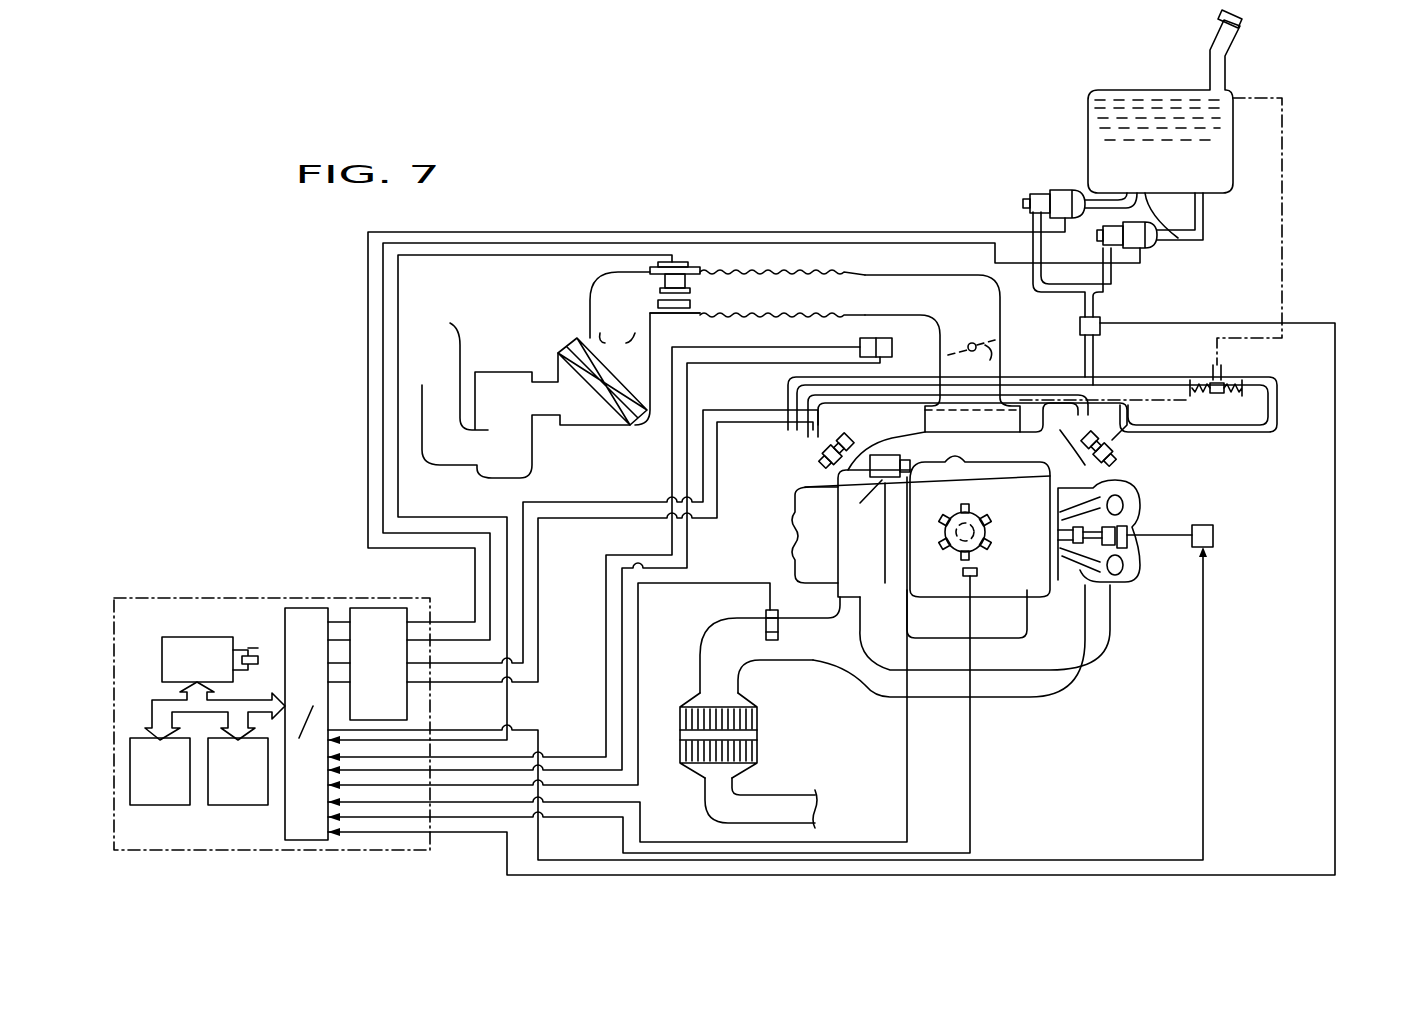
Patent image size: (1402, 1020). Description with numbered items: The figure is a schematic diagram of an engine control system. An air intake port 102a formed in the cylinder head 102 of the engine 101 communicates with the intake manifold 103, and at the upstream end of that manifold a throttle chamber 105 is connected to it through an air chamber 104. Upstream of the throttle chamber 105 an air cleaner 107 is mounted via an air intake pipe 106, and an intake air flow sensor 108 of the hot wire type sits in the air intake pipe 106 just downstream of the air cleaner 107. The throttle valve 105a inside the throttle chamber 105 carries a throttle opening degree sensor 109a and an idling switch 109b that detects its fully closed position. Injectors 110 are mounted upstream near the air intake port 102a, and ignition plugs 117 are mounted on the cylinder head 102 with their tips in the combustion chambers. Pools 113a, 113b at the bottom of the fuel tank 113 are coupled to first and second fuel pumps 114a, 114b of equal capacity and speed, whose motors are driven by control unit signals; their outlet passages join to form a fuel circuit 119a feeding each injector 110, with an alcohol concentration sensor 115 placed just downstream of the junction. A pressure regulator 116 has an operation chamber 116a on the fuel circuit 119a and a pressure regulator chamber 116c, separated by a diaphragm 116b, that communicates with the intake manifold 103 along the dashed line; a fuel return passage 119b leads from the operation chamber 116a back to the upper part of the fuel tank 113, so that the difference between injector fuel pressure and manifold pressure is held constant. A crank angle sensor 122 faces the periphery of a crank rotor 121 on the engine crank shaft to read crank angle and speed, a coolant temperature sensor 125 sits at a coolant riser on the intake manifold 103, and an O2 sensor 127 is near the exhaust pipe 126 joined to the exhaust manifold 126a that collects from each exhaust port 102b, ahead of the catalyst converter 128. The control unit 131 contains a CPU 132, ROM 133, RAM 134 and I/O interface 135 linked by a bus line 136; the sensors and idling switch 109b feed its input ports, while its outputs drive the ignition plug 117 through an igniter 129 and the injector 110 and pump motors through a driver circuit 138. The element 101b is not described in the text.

The engine 101 is at (1152, 500).
The crank angle reference 101b is at (956, 534).
The cylinder head 102 is at (846, 582).
The air intake port 102a is at (1058, 484).
The exhaust port 102b is at (1088, 606).
The intake manifold 103 is at (1093, 446).
The air chamber 104 is at (920, 425).
The throttle chamber 105 is at (998, 333).
The throttle valve 105a is at (982, 355).
The air intake pipe 106 is at (890, 280).
The air cleaner 107 is at (630, 428).
The intake air flow sensor 108 is at (694, 265).
The throttle opening degree sensor 109a is at (888, 335).
The idling switch 109b is at (860, 342).
The injector 110 is at (823, 462).
The fuel tank 113 is at (1088, 120).
The pool 113a is at (1212, 195).
The pool 113b is at (1170, 245).
The first fuel pump 114a is at (1150, 252).
The second fuel pump 114b is at (1068, 190).
The alcohol concentration sensor 115 is at (1080, 322).
The pressure regulator 116 is at (1245, 368).
The operation chamber 116a is at (1208, 370).
The diaphragm 116b is at (1232, 398).
The pressure regulator chamber 116c is at (1205, 398).
The ignition plug 117 is at (1135, 548).
The fuel circuit 119a is at (1096, 360).
The fuel return passage 119b is at (1283, 245).
The crank rotor 121 is at (992, 530).
The crank angle sensor 122 is at (964, 578).
The coolant temperature sensor 125 is at (910, 456).
The exhaust pipe 126 is at (796, 660).
The exhaust manifold 126a is at (1043, 698).
The O2 sensor 127 is at (766, 615).
The catalyst converter 128 is at (758, 736).
The igniter 129 is at (1213, 536).
The control unit 131 is at (212, 598).
The CPU 132 is at (207, 637).
The ROM 133 is at (161, 805).
The RAM 134 is at (240, 805).
The I/O interface 135 is at (306, 608).
The bus line 136 is at (152, 702).
The driver circuit 138 is at (384, 608).